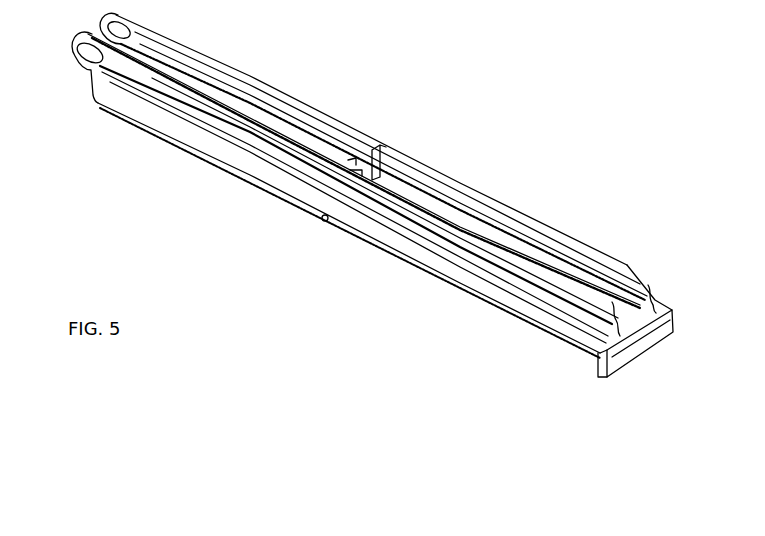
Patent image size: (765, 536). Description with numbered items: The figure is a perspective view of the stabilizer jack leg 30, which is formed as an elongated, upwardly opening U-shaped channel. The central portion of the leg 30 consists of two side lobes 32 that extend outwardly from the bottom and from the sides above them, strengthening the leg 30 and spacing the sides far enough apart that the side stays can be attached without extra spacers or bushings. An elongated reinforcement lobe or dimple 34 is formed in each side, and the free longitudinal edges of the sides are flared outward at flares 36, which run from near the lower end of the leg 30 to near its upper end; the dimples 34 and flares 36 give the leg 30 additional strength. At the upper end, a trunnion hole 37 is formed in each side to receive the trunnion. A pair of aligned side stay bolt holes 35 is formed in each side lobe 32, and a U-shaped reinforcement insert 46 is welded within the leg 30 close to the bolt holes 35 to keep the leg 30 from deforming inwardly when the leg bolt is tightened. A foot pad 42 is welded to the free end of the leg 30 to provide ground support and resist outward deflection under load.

The leg 30 is at (530, 184).
The side lobes 32 is at (435, 265).
The reinforcement lobe or dimple 34 is at (650, 303).
The side stay bolt holes 35 is at (324, 224).
The flares 36 is at (627, 267).
The trunnion hole 37 is at (72, 57).
The foot pad 42 is at (598, 378).
The reinforcement insert 46 is at (379, 143).